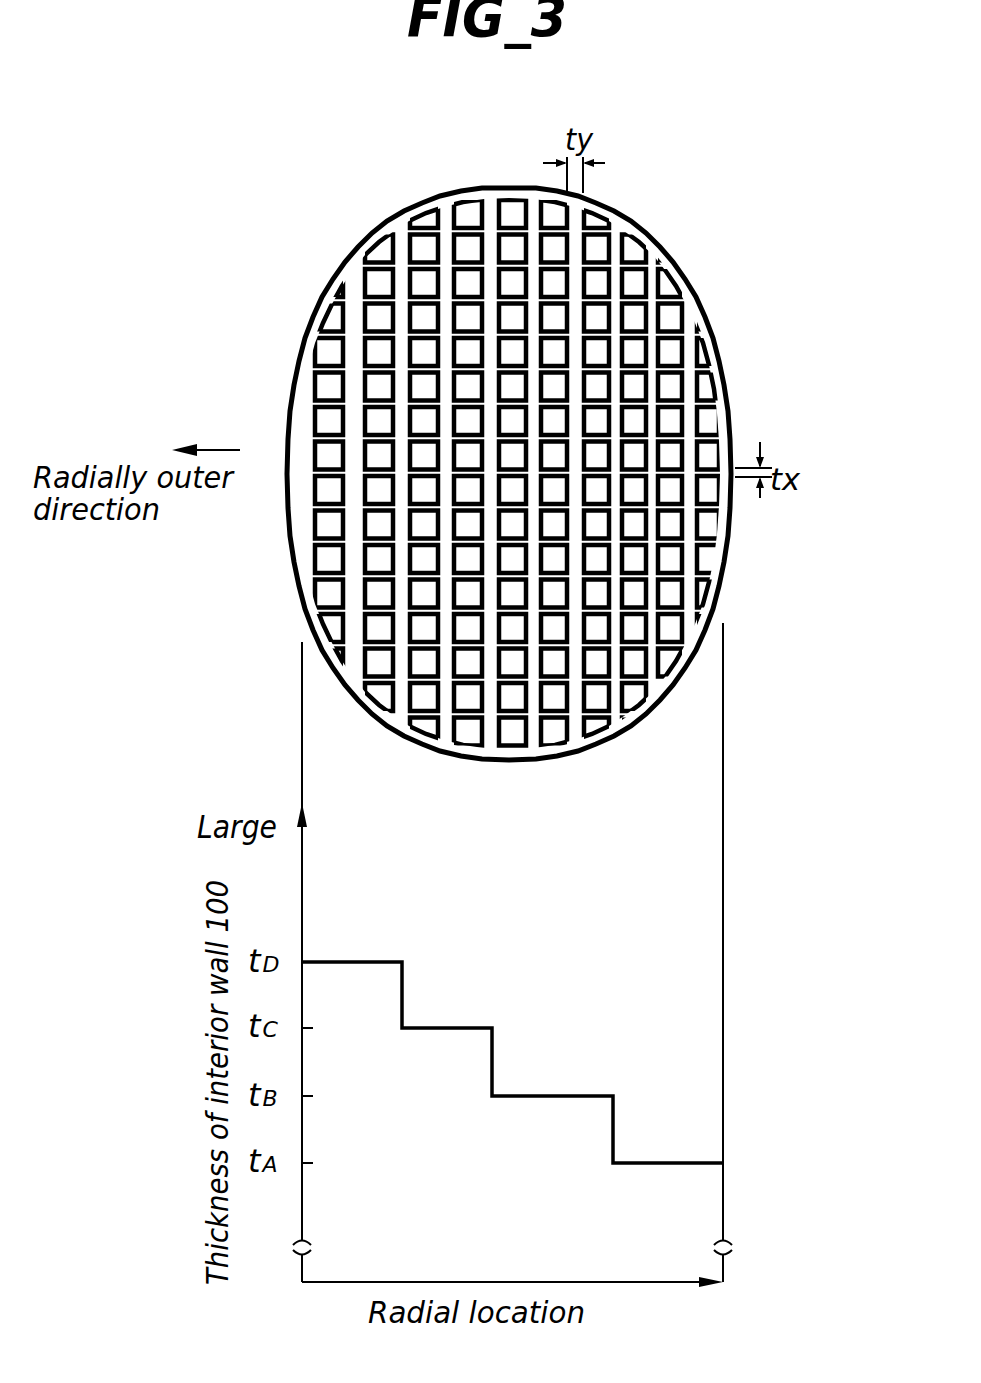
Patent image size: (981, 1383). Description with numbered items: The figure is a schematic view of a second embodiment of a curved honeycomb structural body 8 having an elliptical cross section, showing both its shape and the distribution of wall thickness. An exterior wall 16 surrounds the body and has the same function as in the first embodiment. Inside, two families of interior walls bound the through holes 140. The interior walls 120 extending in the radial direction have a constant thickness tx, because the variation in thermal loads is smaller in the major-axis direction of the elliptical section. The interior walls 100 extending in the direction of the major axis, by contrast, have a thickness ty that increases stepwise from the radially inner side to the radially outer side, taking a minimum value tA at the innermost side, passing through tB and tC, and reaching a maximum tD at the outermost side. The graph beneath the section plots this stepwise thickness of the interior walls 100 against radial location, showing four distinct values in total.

The honeycomb structural body 8 is at (623, 213).
The exterior wall 16 is at (352, 258).
The interior walls extending in the direction of the major axis 100 is at (615, 392).
The interior walls extending in the radial direction 120 is at (423, 333).
The through holes 140 is at (507, 250).